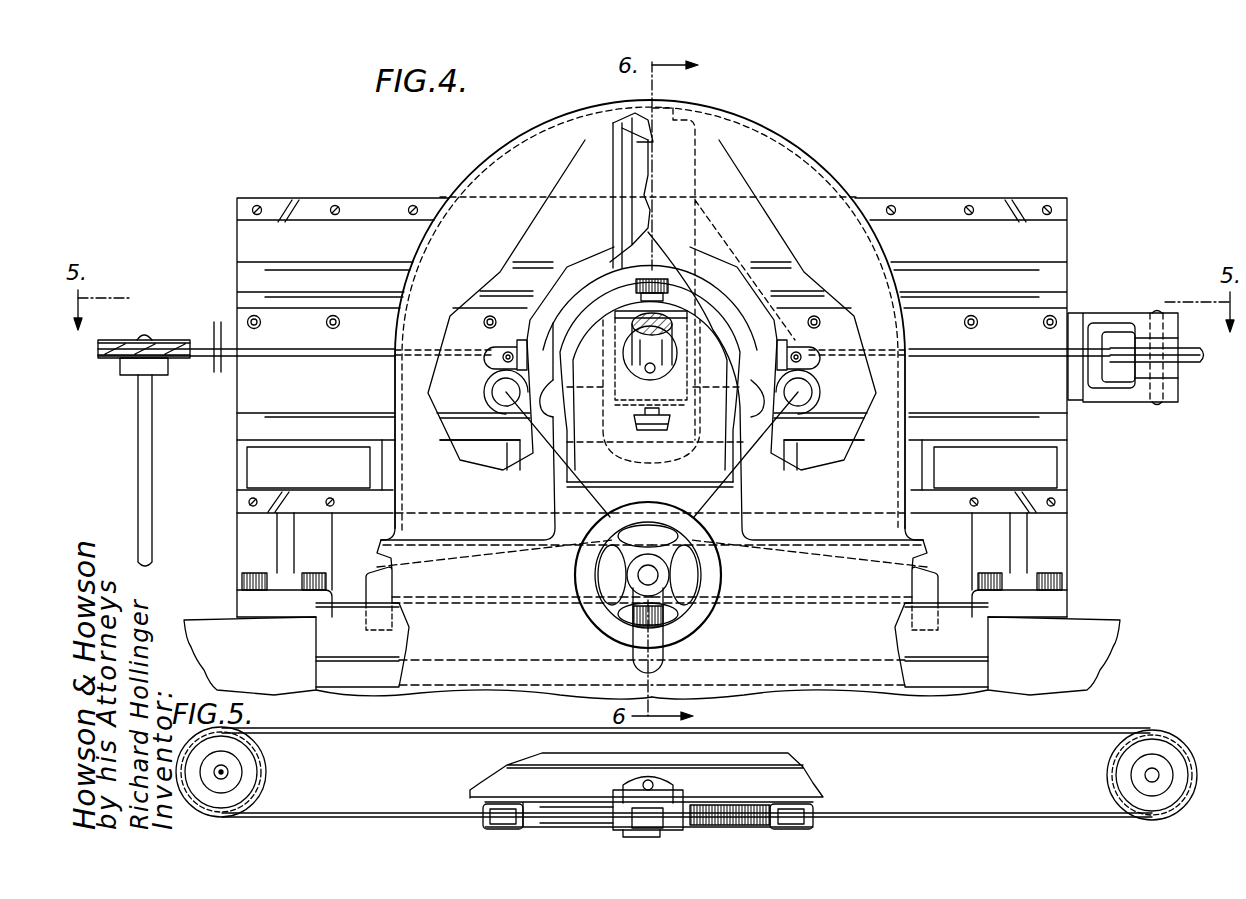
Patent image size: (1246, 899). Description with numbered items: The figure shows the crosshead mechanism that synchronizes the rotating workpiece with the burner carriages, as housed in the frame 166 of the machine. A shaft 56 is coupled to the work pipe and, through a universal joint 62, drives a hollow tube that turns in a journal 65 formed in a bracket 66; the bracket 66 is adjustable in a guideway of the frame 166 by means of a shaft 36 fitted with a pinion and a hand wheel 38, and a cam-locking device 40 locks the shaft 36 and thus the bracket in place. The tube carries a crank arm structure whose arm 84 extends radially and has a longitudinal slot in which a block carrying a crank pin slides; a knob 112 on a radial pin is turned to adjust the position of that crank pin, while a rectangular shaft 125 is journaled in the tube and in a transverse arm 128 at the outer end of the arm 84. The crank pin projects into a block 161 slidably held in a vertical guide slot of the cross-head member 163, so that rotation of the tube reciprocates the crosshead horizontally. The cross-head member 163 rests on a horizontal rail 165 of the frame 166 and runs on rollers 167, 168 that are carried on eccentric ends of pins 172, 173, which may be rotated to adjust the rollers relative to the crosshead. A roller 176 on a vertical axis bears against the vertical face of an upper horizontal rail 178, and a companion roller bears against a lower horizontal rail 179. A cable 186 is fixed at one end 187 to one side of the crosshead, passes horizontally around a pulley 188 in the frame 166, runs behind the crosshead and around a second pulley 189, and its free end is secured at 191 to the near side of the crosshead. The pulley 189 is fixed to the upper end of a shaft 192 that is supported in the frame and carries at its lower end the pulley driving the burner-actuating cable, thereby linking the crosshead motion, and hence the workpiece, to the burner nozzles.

In FIG. 4, the shaft 36 is at (640, 574).
In FIG. 4, the hand wheel 38 is at (722, 574).
In FIG. 4, the cam-locking device 40 is at (660, 655).
In FIG. 4, the shaft 56 is at (667, 316).
In FIG. 4, the universal joint 62 is at (640, 373).
In FIG. 4, the journal 65 is at (597, 337).
In FIG. 4, the bracket 66 is at (745, 490).
In FIG. 4, the arm 84 is at (613, 178).
In FIG. 4, the knob 112 is at (652, 278).
In FIG. 4, the rectangular shaft 125 is at (645, 205).
In FIG. 4, the transverse arm 128 is at (642, 128).
In FIG. 4, the block 161 is at (772, 138).
In FIG. 5, the block 161 is at (672, 826).
In FIG. 4, the cross-head member 163 is at (580, 240).
In FIG. 5, the cross-head member 163 is at (549, 812).
In FIG. 4, the horizontal rail 165 is at (330, 415).
In FIG. 4, the frame 166 is at (376, 252).
In FIG. 5, the frame 166 is at (793, 760).
In FIG. 4, the roller 167 is at (488, 398).
In FIG. 4, the roller 168 is at (812, 388).
In FIG. 4, the pin 172 is at (506, 402).
In FIG. 4, the pin 173 is at (805, 398).
In FIG. 5, the roller 176 is at (648, 776).
In FIG. 4, the horizontal rail 178 is at (978, 200).
In FIG. 4, the horizontal rail 179 is at (308, 492).
In FIG. 4, the cable 186 is at (290, 348).
In FIG. 5, the cable 186 is at (405, 731).
In FIG. 4, the cable end 187 is at (800, 352).
In FIG. 5, the cable end 187 is at (803, 828).
In FIG. 4, the pulley 188 is at (1190, 367).
In FIG. 5, the pulley 188 is at (1122, 774).
In FIG. 4, the second pulley 189 is at (145, 340).
In FIG. 5, the second pulley 189 is at (268, 760).
In FIG. 4, the cable free end 191 is at (505, 353).
In FIG. 5, the cable free end 191 is at (497, 828).
In FIG. 4, the shaft 192 is at (152, 437).
In FIG. 5, the shaft 192 is at (228, 778).